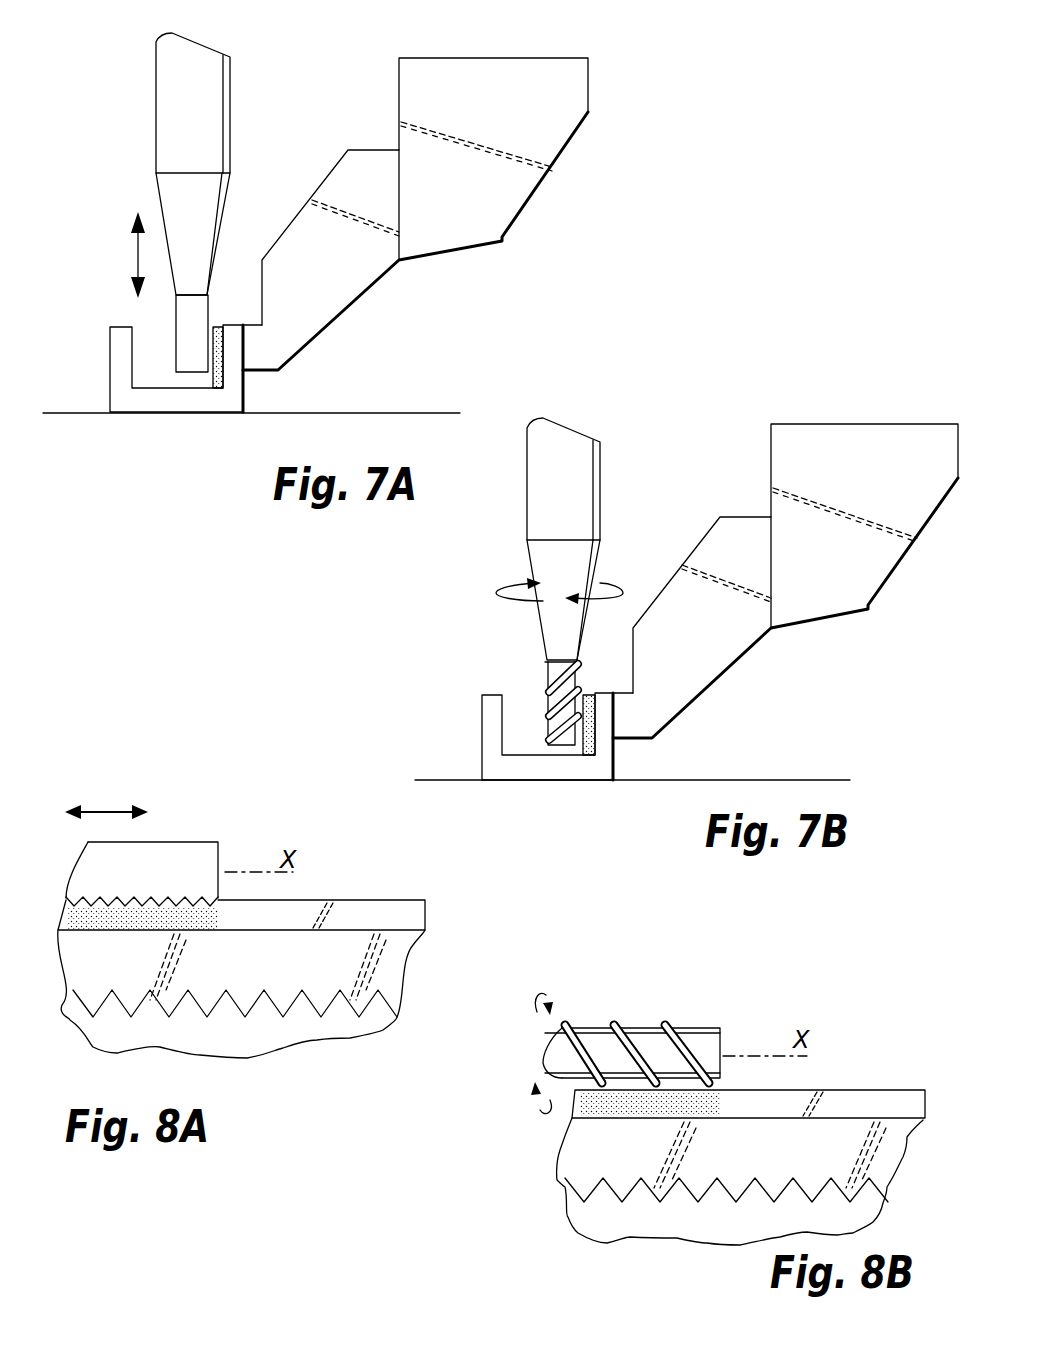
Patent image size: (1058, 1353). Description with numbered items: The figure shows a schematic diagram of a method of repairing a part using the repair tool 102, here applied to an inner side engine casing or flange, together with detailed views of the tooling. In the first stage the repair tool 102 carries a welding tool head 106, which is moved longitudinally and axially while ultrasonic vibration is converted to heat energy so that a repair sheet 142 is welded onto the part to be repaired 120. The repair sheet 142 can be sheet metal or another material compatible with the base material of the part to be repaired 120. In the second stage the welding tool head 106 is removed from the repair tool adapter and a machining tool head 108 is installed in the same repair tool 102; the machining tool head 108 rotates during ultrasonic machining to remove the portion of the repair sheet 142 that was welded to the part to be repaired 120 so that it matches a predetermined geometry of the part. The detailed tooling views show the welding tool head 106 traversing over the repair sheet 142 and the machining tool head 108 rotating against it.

In FIG. 7A, the repair tool 102 is at (249, 94).
In FIG. 7B, the repair tool 102 is at (625, 495).
In FIG. 7A, the welding tool head 106 is at (185, 355).
In FIG. 8A, the welding tool head 106 is at (200, 853).
In FIG. 7B, the machining tool head 108 is at (547, 732).
In FIG. 8B, the machining tool head 108 is at (640, 1037).
In FIG. 7A, the part to be repaired 120 is at (115, 353).
In FIG. 7B, the part to be repaired 120 is at (487, 713).
In FIG. 8A, the part to be repaired 120 is at (330, 953).
In FIG. 8B, the part to be repaired 120 is at (835, 1132).
In FIG. 7A, the repair sheet 142 is at (215, 378).
In FIG. 7B, the repair sheet 142 is at (585, 758).
In FIG. 8A, the repair sheet 142 is at (385, 913).
In FIG. 8B, the repair sheet 142 is at (888, 1103).